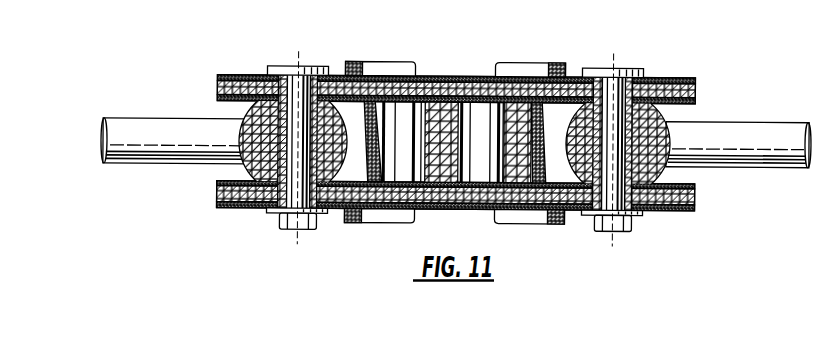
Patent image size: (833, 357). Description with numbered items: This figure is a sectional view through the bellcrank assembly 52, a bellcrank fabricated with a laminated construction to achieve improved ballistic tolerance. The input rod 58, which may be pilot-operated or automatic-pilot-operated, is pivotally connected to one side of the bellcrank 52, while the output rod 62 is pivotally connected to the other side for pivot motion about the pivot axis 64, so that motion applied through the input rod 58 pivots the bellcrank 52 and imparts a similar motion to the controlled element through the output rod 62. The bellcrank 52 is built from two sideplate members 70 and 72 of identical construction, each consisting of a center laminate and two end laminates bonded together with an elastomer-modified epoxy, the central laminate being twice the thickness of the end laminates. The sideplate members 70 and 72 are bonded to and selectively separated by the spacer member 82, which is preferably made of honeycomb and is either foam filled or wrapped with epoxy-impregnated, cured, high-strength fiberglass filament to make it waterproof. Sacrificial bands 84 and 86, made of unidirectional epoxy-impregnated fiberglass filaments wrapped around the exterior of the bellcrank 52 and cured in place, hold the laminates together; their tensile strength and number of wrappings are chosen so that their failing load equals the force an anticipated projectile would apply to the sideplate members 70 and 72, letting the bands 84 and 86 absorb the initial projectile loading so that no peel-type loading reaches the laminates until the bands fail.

The bellcrank assembly 52 is at (445, 146).
The input rod 58 is at (150, 131).
The output rod 62 is at (767, 113).
The pivot axis 64 is at (607, 70).
The sideplate member 70 is at (688, 72).
The sideplate member 72 is at (682, 219).
The spacer member 82 is at (443, 117).
The sacrificial band 84 is at (383, 67).
The sacrificial band 86 is at (522, 67).